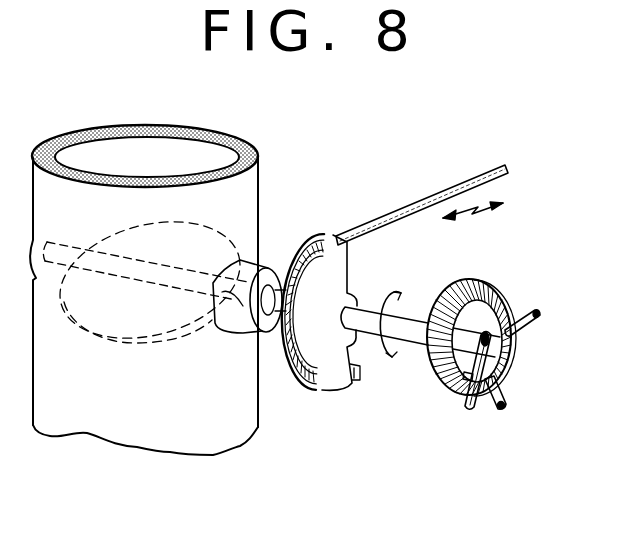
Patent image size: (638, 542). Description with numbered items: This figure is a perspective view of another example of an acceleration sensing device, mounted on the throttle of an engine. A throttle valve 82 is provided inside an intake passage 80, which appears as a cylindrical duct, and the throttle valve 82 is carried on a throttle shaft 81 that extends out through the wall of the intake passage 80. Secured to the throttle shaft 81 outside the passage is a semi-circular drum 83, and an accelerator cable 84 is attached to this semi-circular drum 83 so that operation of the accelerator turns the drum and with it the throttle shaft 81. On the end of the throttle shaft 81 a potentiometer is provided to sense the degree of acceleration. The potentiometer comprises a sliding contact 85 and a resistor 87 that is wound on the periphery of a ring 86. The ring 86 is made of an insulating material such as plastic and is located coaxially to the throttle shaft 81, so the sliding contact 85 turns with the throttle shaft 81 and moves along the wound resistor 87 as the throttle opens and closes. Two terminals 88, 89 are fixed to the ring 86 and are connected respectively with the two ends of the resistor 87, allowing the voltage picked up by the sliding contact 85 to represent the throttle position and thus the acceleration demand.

The intake passage 80 is at (247, 181).
The throttle shaft 81 is at (265, 266).
The throttle valve 82 is at (154, 323).
The semi-circular drum 83 is at (337, 378).
The accelerator cable 84 is at (409, 211).
The sliding contact 85 is at (468, 405).
The ring 86 is at (508, 363).
The resistor 87 is at (436, 389).
The terminal 88 is at (556, 308).
The terminal 89 is at (493, 408).